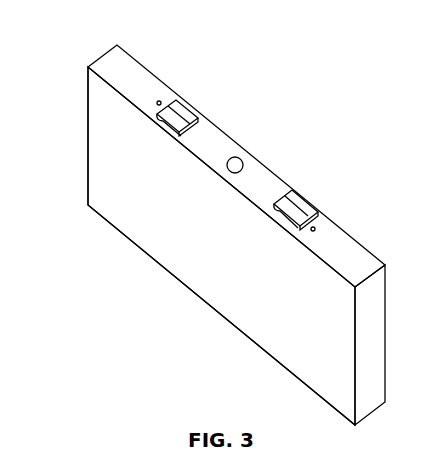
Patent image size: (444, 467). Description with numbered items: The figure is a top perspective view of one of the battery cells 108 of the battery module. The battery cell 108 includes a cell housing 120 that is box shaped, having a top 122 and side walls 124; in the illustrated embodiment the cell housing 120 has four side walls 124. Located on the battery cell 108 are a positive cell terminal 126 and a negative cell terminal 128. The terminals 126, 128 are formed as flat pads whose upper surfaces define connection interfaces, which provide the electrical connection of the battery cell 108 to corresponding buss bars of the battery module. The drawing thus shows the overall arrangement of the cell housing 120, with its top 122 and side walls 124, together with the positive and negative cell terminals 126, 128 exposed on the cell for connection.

The battery cell 108 is at (300, 84).
The cell housing 120 is at (260, 265).
The top 122 is at (128, 63).
The side walls 124 is at (88, 143).
The positive cell terminal 126 is at (193, 110).
The negative cell terminal 128 is at (303, 202).